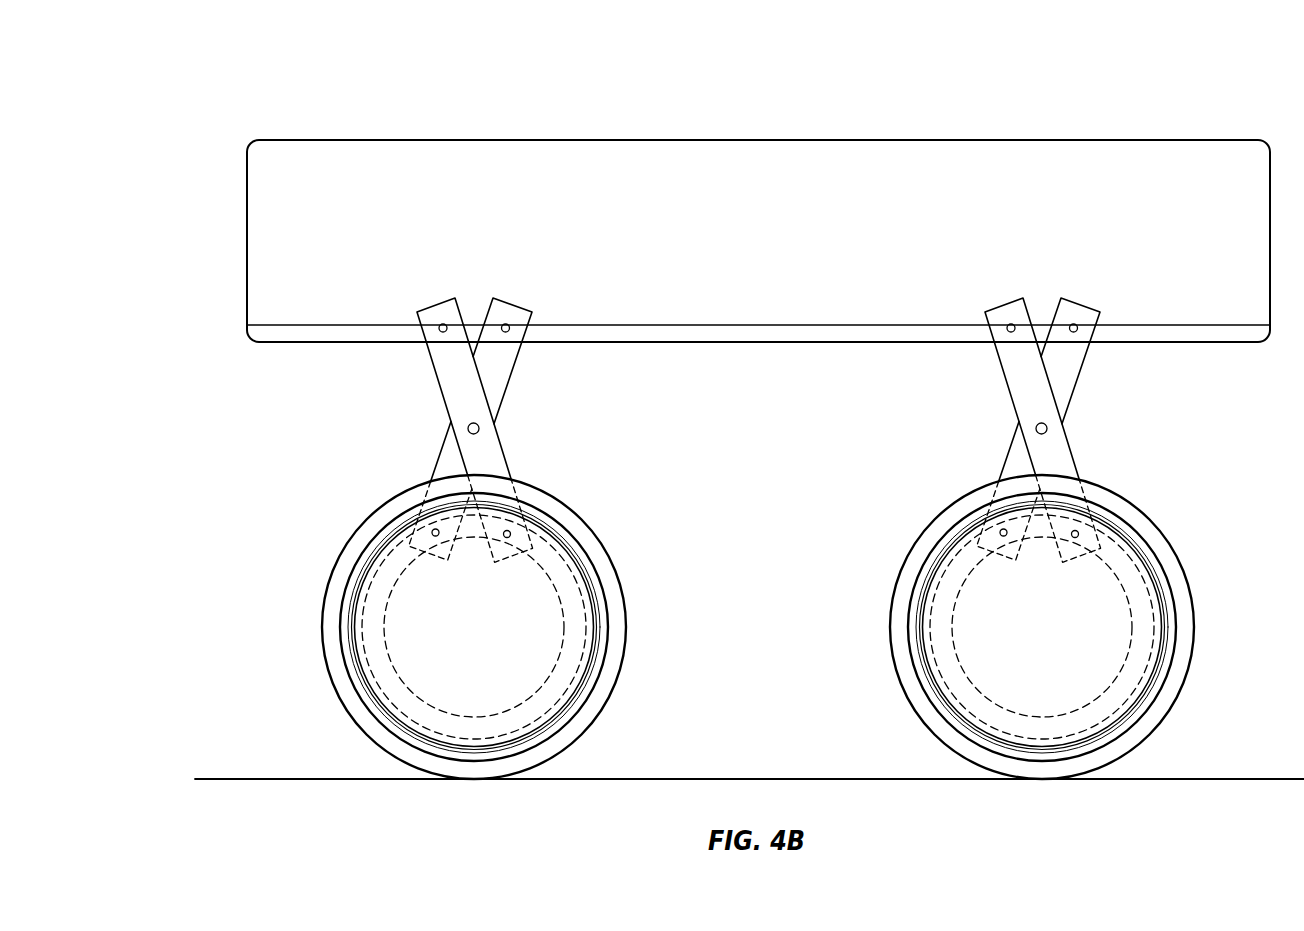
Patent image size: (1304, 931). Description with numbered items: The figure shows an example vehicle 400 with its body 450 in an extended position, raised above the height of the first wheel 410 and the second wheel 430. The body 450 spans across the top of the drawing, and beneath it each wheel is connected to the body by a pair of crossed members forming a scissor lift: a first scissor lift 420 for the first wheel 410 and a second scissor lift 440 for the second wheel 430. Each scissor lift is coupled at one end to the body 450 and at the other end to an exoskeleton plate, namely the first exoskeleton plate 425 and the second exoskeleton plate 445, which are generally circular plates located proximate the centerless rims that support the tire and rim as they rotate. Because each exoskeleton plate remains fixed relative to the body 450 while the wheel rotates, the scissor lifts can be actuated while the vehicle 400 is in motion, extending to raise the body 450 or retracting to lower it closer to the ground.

The vehicle 400 is at (1215, 78).
The body 450 is at (330, 137).
The first wheel 410 is at (355, 720).
The first scissor lift 420 is at (513, 463).
The first exoskeleton plate 425 is at (555, 708).
The second wheel 430 is at (1015, 645).
The second scissor lift 440 is at (1078, 430).
The second exoskeleton plate 445 is at (1063, 666).